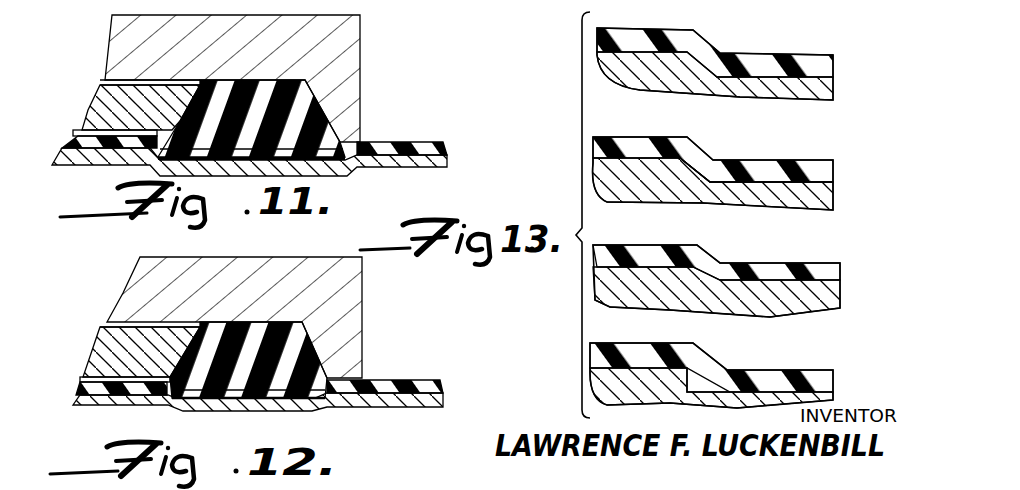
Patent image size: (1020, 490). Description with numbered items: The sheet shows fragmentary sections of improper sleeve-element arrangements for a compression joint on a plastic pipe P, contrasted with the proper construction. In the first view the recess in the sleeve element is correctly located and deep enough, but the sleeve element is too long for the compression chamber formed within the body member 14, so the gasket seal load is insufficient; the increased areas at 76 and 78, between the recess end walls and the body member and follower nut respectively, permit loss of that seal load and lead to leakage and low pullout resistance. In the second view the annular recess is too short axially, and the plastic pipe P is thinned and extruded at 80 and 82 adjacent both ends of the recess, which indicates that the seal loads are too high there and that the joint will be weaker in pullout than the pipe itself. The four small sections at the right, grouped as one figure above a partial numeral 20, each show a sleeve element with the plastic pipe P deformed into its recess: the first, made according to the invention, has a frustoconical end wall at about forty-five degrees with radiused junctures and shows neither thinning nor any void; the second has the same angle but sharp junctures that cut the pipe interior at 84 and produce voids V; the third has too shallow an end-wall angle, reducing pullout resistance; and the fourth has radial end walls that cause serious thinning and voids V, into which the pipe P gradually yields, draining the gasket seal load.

In FIG. 11, the body member 14 is at (368, 59).
In FIG. 12, the body member 14 is at (369, 302).
In FIG. 11, the increased area between recess end wall and body member 76 is at (141, 105).
In FIG. 11, the increased area between recess end wall and follower nut 78 is at (350, 132).
In FIG. 12, the thinned region of plastic pipe 80 is at (160, 397).
In FIG. 12, the thinned region of plastic pipe 82 is at (330, 367).
In FIG. 13, the cut in interior of plastic pipe 84 is at (690, 160).
In FIG. 13, the article 20 is at (873, 5).
In FIG. 11, the plastic pipe P is at (420, 142).
In FIG. 12, the plastic pipe P is at (415, 378).
In FIG. 13, the plastic pipe P is at (770, 55).
In FIG. 13, the voids V is at (727, 153).